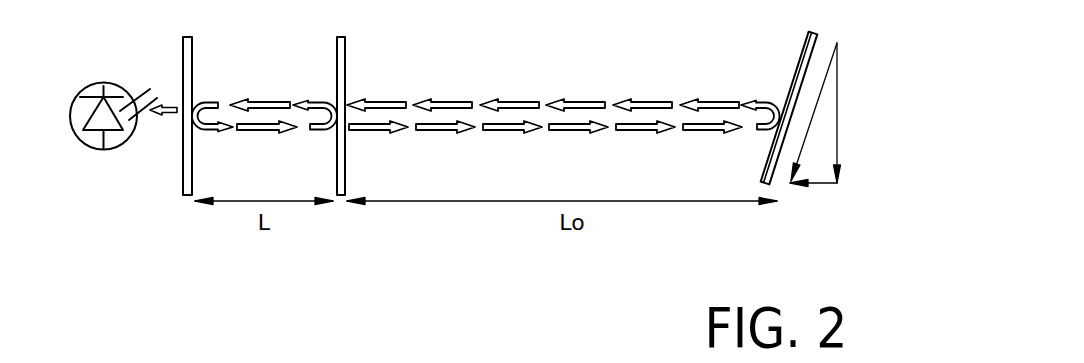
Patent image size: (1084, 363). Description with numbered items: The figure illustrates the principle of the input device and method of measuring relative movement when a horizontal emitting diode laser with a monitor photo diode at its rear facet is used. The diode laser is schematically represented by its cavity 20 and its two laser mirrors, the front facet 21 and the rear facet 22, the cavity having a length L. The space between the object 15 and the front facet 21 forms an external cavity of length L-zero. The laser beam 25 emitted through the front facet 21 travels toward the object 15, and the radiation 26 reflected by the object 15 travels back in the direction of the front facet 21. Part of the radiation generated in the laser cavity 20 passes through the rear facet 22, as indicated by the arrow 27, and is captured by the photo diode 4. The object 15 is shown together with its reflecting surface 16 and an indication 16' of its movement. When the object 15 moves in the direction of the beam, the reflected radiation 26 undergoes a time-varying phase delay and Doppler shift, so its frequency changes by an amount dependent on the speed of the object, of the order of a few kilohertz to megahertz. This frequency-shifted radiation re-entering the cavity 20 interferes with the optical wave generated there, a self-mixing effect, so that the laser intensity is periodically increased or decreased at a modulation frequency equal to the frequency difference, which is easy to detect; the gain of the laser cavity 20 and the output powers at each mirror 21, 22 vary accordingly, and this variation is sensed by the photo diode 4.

The photo diode 4 is at (79, 103).
The rear facet 22 is at (183, 47).
The front facet 21 is at (347, 47).
The light emitted toward source 27 is at (163, 117).
The cavity 20 is at (268, 103).
The reflected radiation 26 is at (517, 105).
The laser beam 25 is at (513, 128).
The object 15 is at (797, 67).
The reflecting layer of mirror 16 is at (755, 108).
The mirror displacement direction 16' is at (818, 218).